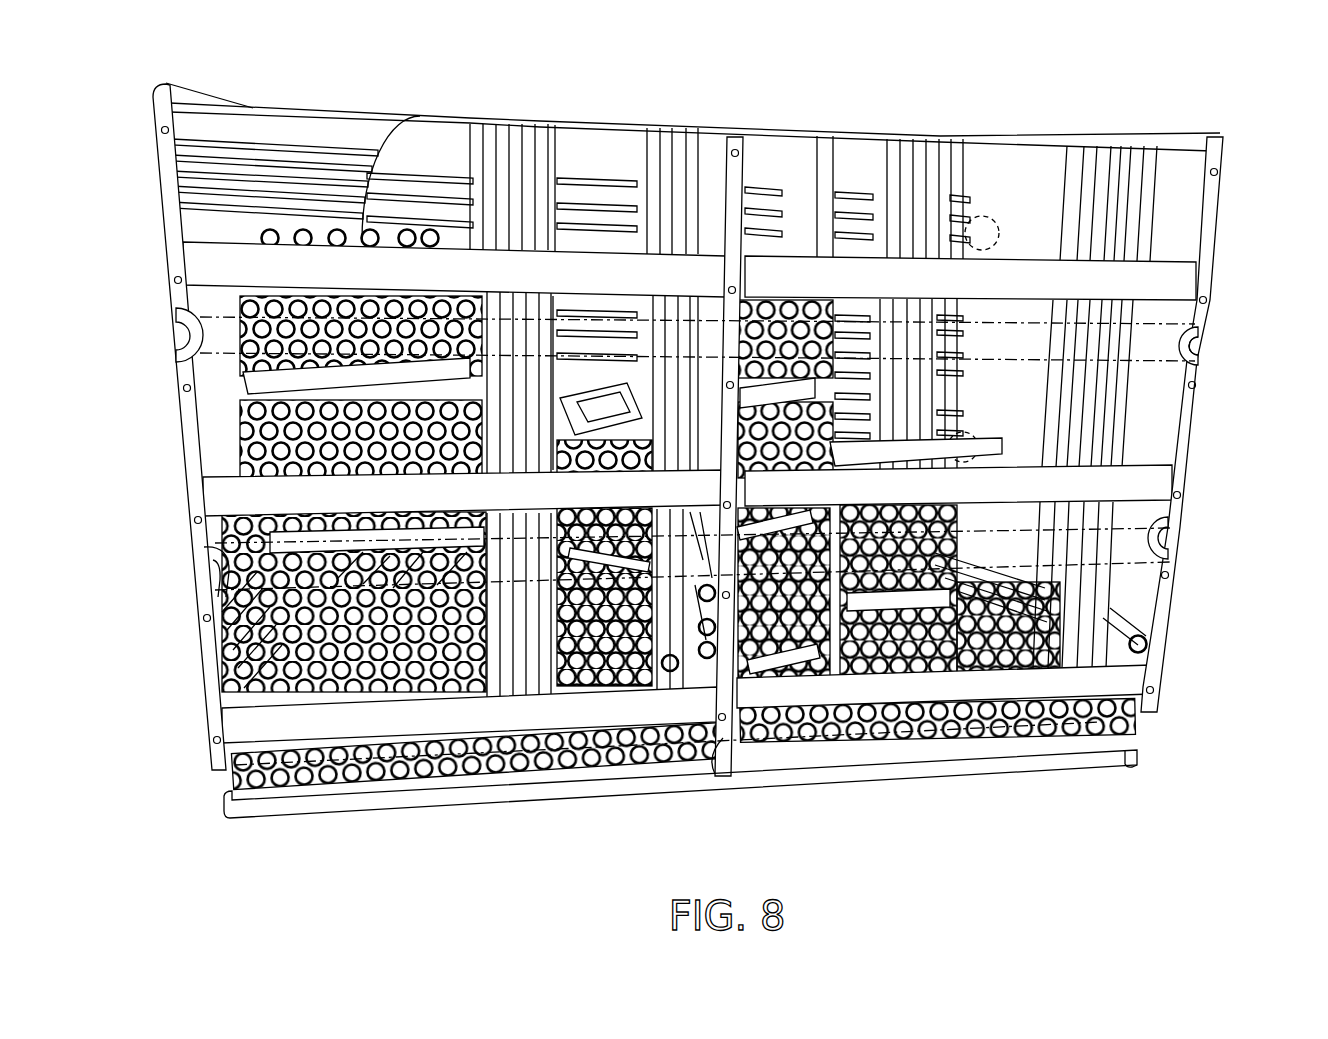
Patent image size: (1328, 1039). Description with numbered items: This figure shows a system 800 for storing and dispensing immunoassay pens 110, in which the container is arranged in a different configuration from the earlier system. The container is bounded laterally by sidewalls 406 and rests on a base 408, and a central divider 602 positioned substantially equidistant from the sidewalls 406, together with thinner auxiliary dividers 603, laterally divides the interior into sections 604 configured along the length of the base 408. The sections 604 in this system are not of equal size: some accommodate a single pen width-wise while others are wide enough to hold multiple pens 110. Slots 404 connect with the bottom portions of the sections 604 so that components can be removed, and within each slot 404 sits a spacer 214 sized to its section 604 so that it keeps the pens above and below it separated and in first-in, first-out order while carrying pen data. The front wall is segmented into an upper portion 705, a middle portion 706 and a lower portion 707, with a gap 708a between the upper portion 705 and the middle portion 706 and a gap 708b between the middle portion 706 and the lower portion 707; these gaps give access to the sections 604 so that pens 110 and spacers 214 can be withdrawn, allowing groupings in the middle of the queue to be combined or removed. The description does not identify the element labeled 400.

The system for storing and dispensing immunoassay 800 is at (1252, 57).
The sections 604 is at (262, 128).
The battery cell assembly 400 is at (368, 112).
The auxiliary dividers 603 is at (473, 125).
The slot 404 is at (605, 162).
The central divider 602 is at (740, 174).
The upper portion 705 is at (1017, 197).
The sidewalls 406 is at (172, 156).
The spacer 214 is at (510, 410).
The gap 708a is at (835, 440).
The pens 110 is at (1168, 348).
The middle portion 706 is at (1147, 400).
The gap 708b is at (222, 563).
The lower portion 707 is at (1120, 600).
The base 408 is at (622, 792).